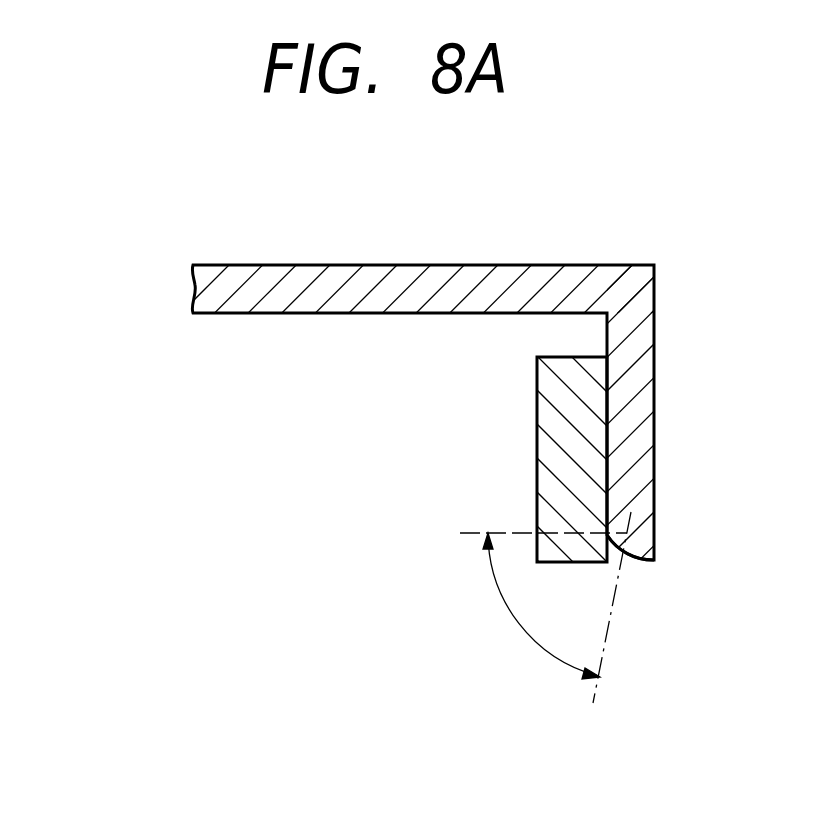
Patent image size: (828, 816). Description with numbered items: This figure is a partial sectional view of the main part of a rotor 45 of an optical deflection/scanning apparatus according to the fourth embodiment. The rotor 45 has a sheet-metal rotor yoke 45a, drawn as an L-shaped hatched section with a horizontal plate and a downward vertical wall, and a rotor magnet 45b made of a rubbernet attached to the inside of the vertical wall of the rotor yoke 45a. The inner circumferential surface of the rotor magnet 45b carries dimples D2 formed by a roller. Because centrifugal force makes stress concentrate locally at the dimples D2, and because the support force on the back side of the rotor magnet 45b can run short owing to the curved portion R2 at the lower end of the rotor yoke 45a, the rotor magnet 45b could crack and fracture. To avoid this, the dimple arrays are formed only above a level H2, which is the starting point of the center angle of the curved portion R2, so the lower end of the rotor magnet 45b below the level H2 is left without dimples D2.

The rotor 45 is at (178, 260).
The rotor yoke 45a is at (400, 280).
The rotor magnet 45b is at (597, 442).
The dimples D2 is at (538, 488).
The level H2 is at (467, 533).
The curved portion R2 is at (612, 546).